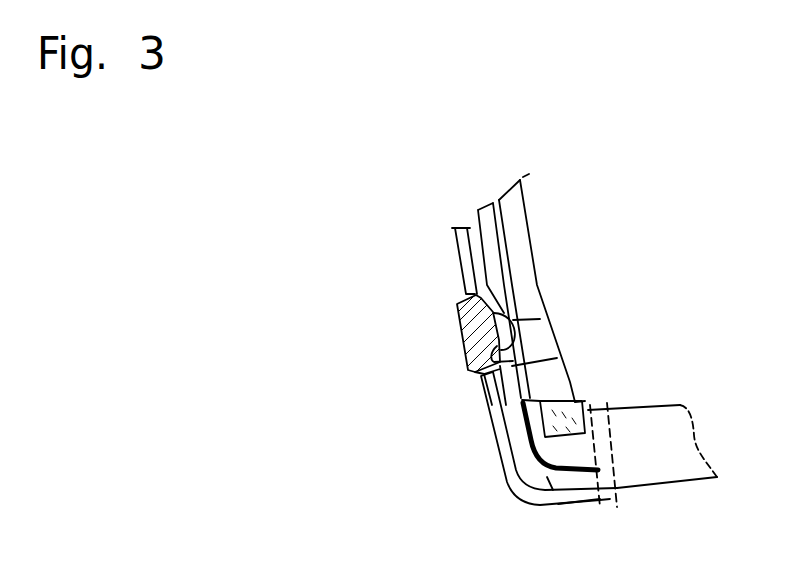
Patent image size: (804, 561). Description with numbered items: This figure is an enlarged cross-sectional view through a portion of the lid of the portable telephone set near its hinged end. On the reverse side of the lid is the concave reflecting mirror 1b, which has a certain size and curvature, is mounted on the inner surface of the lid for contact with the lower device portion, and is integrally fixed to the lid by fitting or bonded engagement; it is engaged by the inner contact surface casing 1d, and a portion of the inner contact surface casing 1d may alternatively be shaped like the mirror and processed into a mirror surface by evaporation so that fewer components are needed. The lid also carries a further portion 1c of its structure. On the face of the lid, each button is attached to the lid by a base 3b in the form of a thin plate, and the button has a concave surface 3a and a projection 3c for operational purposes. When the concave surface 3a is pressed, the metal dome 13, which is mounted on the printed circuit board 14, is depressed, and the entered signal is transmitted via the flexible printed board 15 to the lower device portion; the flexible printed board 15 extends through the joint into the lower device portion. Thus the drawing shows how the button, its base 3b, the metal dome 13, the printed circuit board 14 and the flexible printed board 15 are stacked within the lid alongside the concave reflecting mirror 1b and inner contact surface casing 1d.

The concave reflecting mirror 1b is at (538, 258).
The roof panel flange portion 1c is at (497, 451).
The inner contact surface casing 1d is at (583, 397).
The concave surface 3a is at (457, 340).
The base 3b is at (468, 227).
The projection 3c is at (557, 358).
The metal dome 13 is at (520, 320).
The printed circuit board 14 is at (492, 208).
The flexible printed board 15 is at (563, 502).